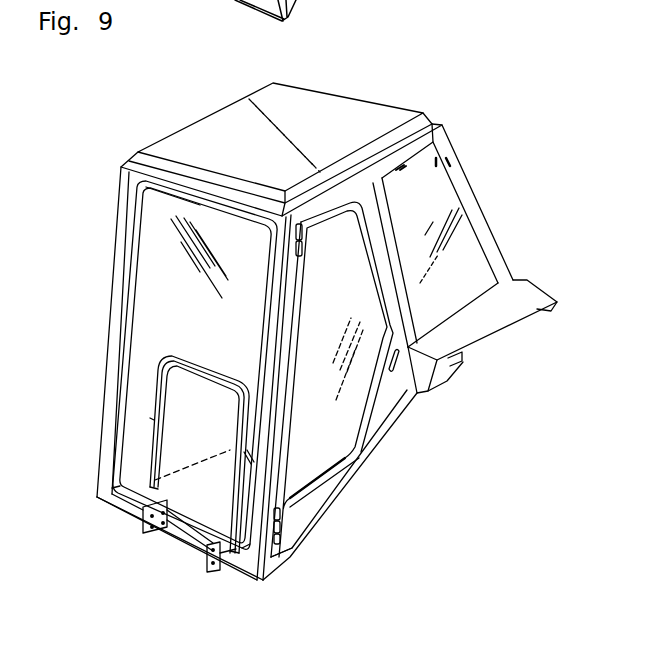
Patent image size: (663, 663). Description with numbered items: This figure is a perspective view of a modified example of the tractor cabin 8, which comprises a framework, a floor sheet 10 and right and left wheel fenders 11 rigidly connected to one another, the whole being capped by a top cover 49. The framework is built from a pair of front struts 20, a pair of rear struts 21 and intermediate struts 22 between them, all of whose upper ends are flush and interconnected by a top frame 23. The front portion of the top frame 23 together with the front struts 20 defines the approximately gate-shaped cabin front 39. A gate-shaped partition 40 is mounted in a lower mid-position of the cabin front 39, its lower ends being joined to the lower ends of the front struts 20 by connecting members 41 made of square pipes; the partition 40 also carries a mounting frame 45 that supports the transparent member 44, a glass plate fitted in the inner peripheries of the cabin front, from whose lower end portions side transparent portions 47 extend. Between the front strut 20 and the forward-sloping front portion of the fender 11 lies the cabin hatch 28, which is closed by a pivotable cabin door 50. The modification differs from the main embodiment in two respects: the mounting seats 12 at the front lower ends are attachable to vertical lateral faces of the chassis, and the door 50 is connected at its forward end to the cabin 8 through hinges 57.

The cabin 8 is at (249, 81).
The top cover 49 is at (208, 126).
The top frame 23 is at (165, 186).
The cabin front 39 is at (150, 290).
The transparent member 44 is at (209, 317).
The mounting frame 45 is at (198, 357).
The front struts 20 is at (108, 373).
The partition 40 is at (150, 418).
The side transparent portions 47 is at (127, 470).
The floor sheet 10 is at (140, 494).
The connecting members 41 is at (135, 515).
The mounting seats 12 is at (213, 542).
The hinges 57 is at (305, 243).
The rear struts 21 is at (486, 230).
The intermediate struts 22 is at (408, 288).
The wheel fenders 11 is at (497, 316).
The cabin door 50 is at (388, 417).
The cabin hatch 28 is at (340, 507).